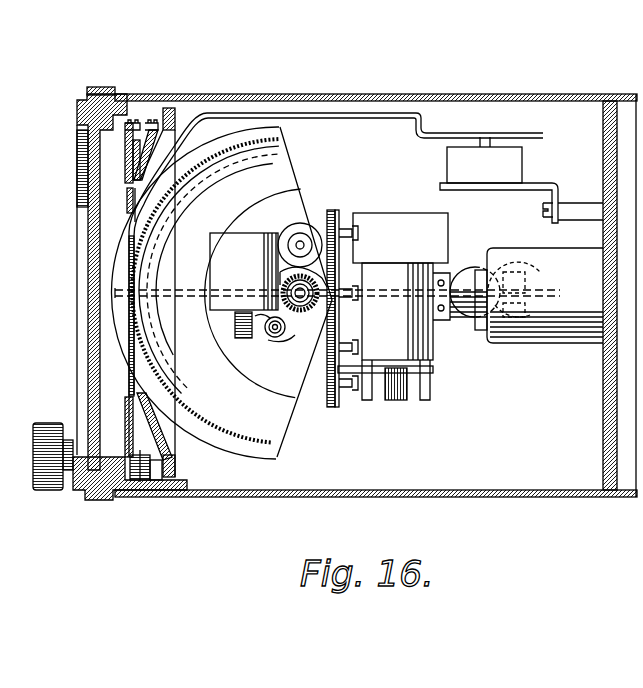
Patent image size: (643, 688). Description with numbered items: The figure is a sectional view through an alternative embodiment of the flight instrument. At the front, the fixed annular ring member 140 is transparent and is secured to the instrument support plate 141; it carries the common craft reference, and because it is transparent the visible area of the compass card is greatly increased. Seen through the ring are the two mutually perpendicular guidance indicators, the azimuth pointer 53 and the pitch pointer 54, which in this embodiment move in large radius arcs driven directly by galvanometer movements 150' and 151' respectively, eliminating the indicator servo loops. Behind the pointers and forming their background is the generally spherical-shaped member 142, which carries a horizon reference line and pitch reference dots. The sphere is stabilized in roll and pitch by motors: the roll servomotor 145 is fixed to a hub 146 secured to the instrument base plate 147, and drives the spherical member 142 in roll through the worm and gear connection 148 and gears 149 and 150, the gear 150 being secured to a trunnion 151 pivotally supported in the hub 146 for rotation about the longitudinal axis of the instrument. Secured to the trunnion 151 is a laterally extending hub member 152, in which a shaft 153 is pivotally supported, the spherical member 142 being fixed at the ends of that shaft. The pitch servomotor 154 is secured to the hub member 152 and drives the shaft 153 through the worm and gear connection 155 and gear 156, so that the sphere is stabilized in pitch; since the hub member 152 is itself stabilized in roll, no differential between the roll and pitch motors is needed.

The instrument support plate 141 is at (182, 113).
The instrument base plate 147 is at (592, 106).
The fixed annular ring member 140 is at (128, 194).
The azimuth pointer 53 is at (117, 238).
The pitch pointer 54 is at (113, 303).
The pitch servomotor 154 is at (232, 222).
The hub member 152 is at (293, 293).
The shaft 153 is at (280, 290).
The worm and gear connection 155 is at (253, 338).
The gear 156 is at (274, 340).
The gear 150 is at (288, 342).
The gear 149 is at (327, 352).
The spherical background member 142 is at (245, 455).
The worm and gear connection 148 is at (403, 398).
The roll servomotor 145 is at (435, 355).
The hub 146 is at (566, 340).
The trunnion 151 is at (534, 273).
The galvanometer movement 151' is at (483, 271).
The galvanometer movement 150' is at (521, 180).